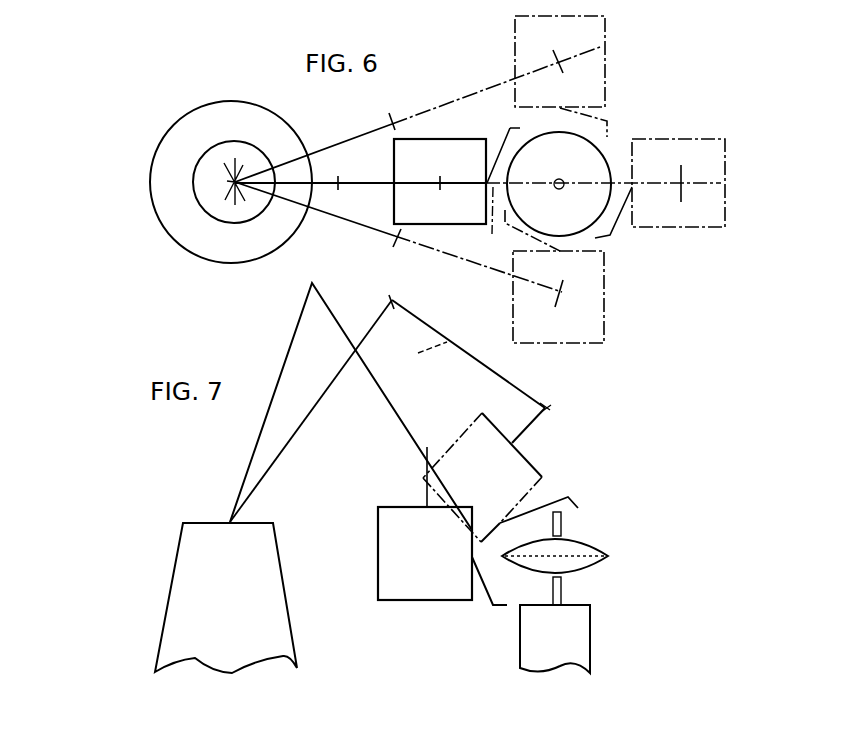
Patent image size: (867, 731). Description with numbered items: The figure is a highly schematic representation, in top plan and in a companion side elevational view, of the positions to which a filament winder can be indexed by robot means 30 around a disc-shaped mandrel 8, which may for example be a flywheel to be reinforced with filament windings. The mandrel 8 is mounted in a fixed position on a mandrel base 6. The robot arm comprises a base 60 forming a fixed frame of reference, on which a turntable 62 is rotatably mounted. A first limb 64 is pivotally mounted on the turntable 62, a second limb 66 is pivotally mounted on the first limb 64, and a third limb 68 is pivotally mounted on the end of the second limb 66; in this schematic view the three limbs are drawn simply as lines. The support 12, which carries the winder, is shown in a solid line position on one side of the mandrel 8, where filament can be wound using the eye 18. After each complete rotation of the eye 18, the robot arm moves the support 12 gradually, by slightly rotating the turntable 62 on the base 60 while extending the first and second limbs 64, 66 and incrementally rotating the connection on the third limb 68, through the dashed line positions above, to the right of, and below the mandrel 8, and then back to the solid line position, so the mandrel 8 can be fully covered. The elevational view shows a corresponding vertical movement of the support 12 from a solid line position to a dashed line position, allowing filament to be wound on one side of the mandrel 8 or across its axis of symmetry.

In FIG. 7, the mandrel base 6 is at (587, 630).
In FIG. 6, the mandrel 8 is at (595, 160).
In FIG. 7, the mandrel 8 is at (593, 547).
In FIG. 6, the support 12 is at (605, 80).
In FIG. 7, the support 12 is at (407, 507).
In FIG. 6, the eye 18 is at (508, 122).
In FIG. 6, the robot means 30 is at (138, 198).
In FIG. 6, the base 60 is at (225, 258).
In FIG. 7, the base 60 is at (277, 595).
In FIG. 6, the turntable 62 is at (217, 155).
In FIG. 6, the first limb 64 is at (318, 143).
In FIG. 7, the first limb 64 is at (340, 373).
In FIG. 6, the second limb 66 is at (492, 84).
In FIG. 7, the second limb 66 is at (392, 398).
In FIG. 6, the third limb 68 is at (600, 50).
In FIG. 7, the third limb 68 is at (427, 460).